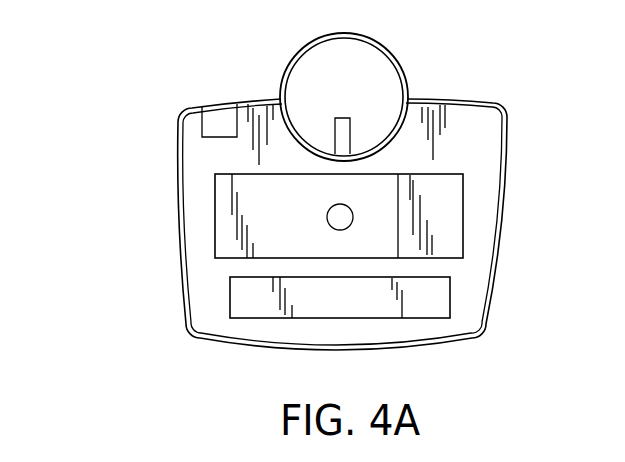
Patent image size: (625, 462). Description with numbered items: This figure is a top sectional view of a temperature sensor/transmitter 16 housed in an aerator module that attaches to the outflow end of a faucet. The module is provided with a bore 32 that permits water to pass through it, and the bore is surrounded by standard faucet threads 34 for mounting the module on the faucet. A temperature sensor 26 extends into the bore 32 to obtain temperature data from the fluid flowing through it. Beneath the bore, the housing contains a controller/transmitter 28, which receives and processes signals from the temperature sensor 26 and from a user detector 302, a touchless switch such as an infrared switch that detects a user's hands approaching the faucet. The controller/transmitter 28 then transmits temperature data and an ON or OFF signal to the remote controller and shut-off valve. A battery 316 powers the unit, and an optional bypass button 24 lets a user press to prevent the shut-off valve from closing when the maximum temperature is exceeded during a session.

The temperature sensor/transmitter 16 is at (130, 292).
The bypass button 24 is at (338, 217).
The temperature sensor 26 is at (348, 118).
The controller/transmitter 28 is at (445, 210).
The bore 32 is at (328, 78).
The faucet threads 34 is at (402, 53).
The user detector 302 is at (220, 118).
The battery 316 is at (432, 293).